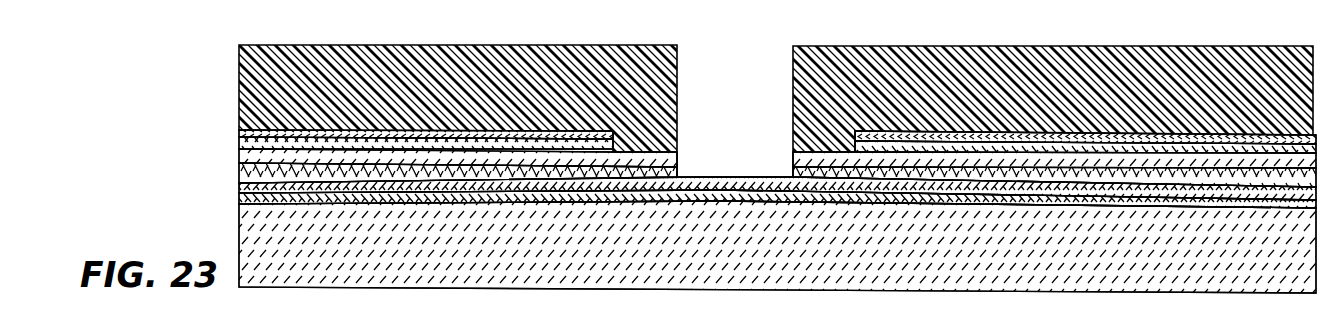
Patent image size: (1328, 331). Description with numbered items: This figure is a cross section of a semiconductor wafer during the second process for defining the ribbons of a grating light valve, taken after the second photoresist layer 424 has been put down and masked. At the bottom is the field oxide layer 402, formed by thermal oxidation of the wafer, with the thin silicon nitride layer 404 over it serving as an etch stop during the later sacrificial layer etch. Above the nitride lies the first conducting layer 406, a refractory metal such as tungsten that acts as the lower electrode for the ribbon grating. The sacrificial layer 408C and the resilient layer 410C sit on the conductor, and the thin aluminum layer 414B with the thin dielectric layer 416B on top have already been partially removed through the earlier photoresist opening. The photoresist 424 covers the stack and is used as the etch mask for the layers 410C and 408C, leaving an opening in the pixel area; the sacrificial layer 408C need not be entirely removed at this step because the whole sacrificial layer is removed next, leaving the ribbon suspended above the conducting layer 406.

The field oxide layer 402 is at (1090, 274).
The silicon nitride layer 404 is at (239, 200).
The first conducting layer 406 is at (239, 189).
The sacrificial layer 408C is at (239, 170).
The resilient layer 410C is at (793, 162).
The thin aluminum layer 414B is at (239, 142).
The thin dielectric layer 416B is at (239, 131).
The second photoresist layer 424 is at (793, 73).